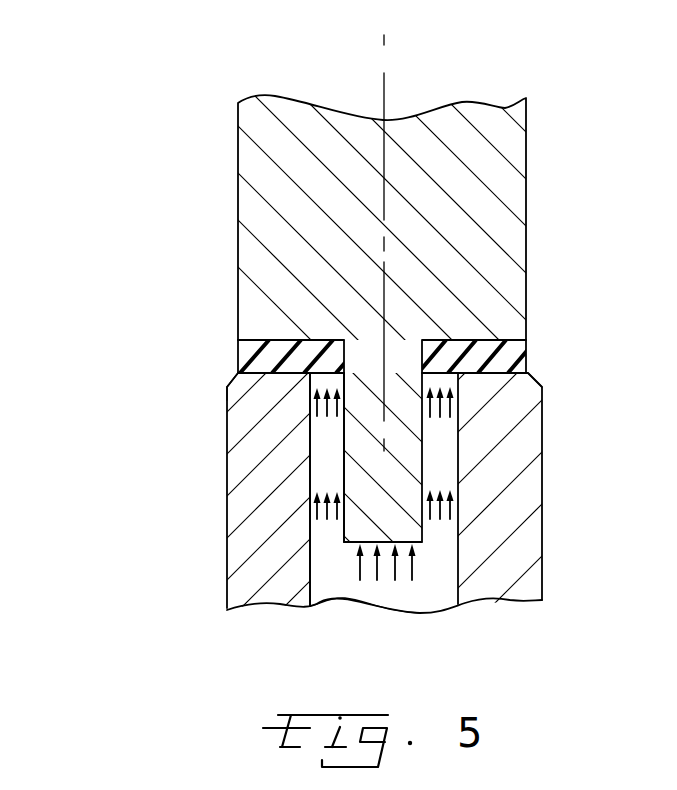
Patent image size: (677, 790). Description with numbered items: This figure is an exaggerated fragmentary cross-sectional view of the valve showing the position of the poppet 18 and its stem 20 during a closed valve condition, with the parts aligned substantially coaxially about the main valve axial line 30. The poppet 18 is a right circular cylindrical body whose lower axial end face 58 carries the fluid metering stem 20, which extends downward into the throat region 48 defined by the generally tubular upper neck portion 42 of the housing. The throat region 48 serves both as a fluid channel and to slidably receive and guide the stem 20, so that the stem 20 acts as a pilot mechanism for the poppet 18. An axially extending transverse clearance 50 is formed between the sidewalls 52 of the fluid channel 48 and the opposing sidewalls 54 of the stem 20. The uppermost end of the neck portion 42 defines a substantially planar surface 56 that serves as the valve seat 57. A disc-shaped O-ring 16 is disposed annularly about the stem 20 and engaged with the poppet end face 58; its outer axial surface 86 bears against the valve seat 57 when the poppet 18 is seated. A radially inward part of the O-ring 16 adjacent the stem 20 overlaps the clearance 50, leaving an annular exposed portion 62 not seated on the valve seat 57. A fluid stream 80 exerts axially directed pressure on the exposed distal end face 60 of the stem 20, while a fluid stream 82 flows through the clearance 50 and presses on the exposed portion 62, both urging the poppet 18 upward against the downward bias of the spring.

The upper O-ring 16 is at (520, 354).
The poppet 18 is at (443, 207).
The stem 20 is at (402, 521).
The main valve axial line 30 is at (384, 75).
The upper neck portion 42 is at (287, 569).
The throat region 48 is at (347, 592).
The transverse clearance 50 is at (329, 454).
The sidewalls of fluid channel 52 is at (310, 437).
The sidewalls of stem 54 is at (343, 473).
The planar surface 56 is at (231, 360).
The valve seat 57 is at (208, 376).
The end face 58 is at (277, 340).
The distal end face 60 is at (403, 542).
The exposed portion 62 is at (330, 361).
The fluid stream 80 is at (377, 567).
The fluid stream 82 is at (450, 507).
The outer axial surface 86 is at (271, 361).